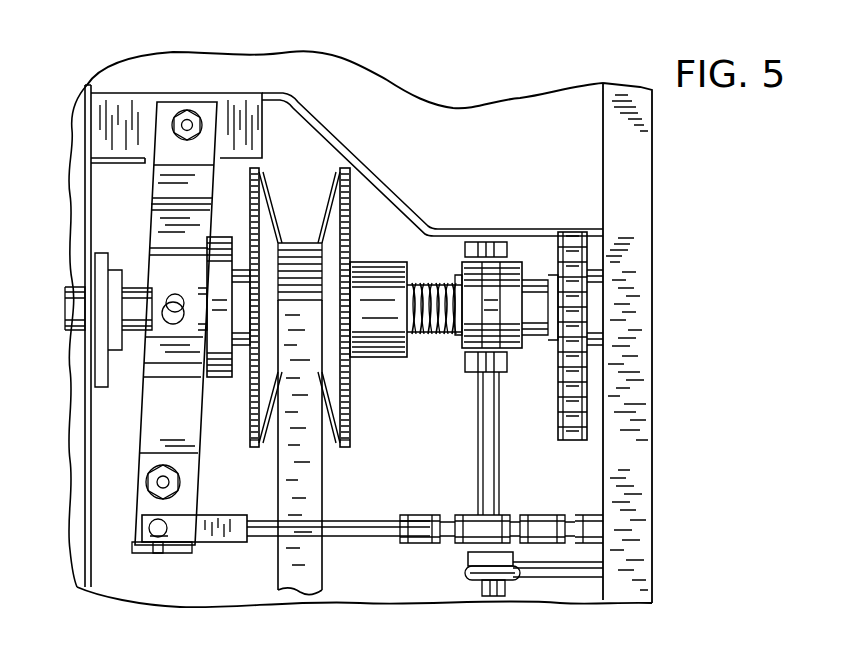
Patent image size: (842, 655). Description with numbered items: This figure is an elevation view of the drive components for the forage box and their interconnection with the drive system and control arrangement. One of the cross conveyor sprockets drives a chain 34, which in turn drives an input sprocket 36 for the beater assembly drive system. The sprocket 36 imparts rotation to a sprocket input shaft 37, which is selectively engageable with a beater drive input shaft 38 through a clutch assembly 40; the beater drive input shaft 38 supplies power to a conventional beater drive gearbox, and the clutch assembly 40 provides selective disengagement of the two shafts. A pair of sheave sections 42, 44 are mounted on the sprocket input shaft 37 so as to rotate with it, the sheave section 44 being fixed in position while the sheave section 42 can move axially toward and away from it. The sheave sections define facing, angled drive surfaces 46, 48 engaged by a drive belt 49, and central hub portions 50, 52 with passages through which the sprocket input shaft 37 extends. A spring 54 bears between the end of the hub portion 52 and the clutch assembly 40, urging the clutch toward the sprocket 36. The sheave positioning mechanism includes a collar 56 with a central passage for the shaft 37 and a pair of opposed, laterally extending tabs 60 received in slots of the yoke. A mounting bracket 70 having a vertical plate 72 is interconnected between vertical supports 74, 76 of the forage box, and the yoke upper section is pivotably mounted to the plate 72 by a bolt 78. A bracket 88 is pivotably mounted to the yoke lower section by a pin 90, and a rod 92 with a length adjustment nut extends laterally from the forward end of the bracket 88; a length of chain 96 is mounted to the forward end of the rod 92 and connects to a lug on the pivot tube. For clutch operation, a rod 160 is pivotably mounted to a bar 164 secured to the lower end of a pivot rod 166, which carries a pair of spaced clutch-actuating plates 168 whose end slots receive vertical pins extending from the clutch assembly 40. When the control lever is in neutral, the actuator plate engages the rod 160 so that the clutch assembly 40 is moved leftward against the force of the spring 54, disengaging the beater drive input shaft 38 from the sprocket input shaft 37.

The chain 34 is at (588, 400).
The input sprocket 36 is at (598, 262).
The sprocket input shaft 37 is at (525, 290).
The beater drive input shaft 38 is at (75, 328).
The clutch assembly 40 is at (513, 356).
The sheave section 42 is at (247, 433).
The sheave section 44 is at (357, 428).
The angled drive surface 46 is at (277, 232).
The angled drive surface 48 is at (330, 202).
The drive belt 49 is at (325, 558).
The central hub portion 50 is at (243, 385).
The central hub portion 52 is at (375, 357).
The spring 54 is at (432, 280).
The collar 56 is at (230, 237).
The tabs 60 is at (168, 328).
The mounting bracket 70 is at (345, 140).
The vertical plate 72 is at (143, 163).
The vertical support 74 is at (98, 82).
The vertical support 76 is at (603, 110).
The bolt 78 is at (183, 111).
The bracket 88 is at (228, 542).
The pin 90 is at (153, 536).
The rod 92 is at (348, 519).
The length of chain 96 is at (540, 514).
The rod 160 is at (548, 588).
The bar 164 is at (465, 556).
The pivot rod 166 is at (477, 472).
The clutch-actuating plates 168 is at (516, 257).